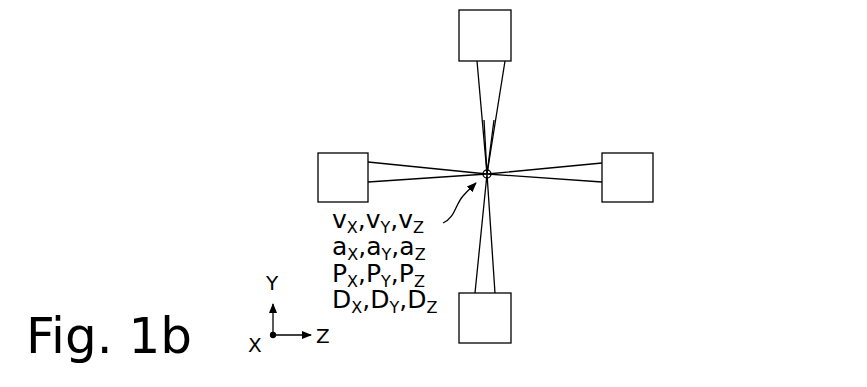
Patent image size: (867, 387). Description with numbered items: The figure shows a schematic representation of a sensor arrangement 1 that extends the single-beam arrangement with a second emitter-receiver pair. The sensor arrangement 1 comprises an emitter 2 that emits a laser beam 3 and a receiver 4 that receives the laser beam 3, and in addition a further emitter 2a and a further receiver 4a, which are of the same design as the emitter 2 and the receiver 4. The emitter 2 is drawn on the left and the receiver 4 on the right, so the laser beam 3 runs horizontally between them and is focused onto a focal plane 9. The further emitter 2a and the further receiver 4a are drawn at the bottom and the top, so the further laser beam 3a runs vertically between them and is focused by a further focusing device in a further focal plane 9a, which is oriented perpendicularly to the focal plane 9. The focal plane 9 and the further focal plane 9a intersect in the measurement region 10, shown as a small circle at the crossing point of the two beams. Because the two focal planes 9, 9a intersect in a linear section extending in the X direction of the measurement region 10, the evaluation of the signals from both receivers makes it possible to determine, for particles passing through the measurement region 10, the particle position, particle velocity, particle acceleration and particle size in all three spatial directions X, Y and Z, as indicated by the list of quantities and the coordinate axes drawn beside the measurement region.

The sensor arrangement 1 is at (326, 93).
The emitter 2 is at (348, 180).
The further emitter 2a is at (495, 325).
The laser beam 3 is at (392, 170).
The further laser beam 3a is at (488, 78).
The receiver 4 is at (625, 180).
The further receiver 4a is at (483, 38).
The focal plane 9 is at (491, 130).
The further focal plane 9a is at (533, 177).
The measurement region 10 is at (481, 168).